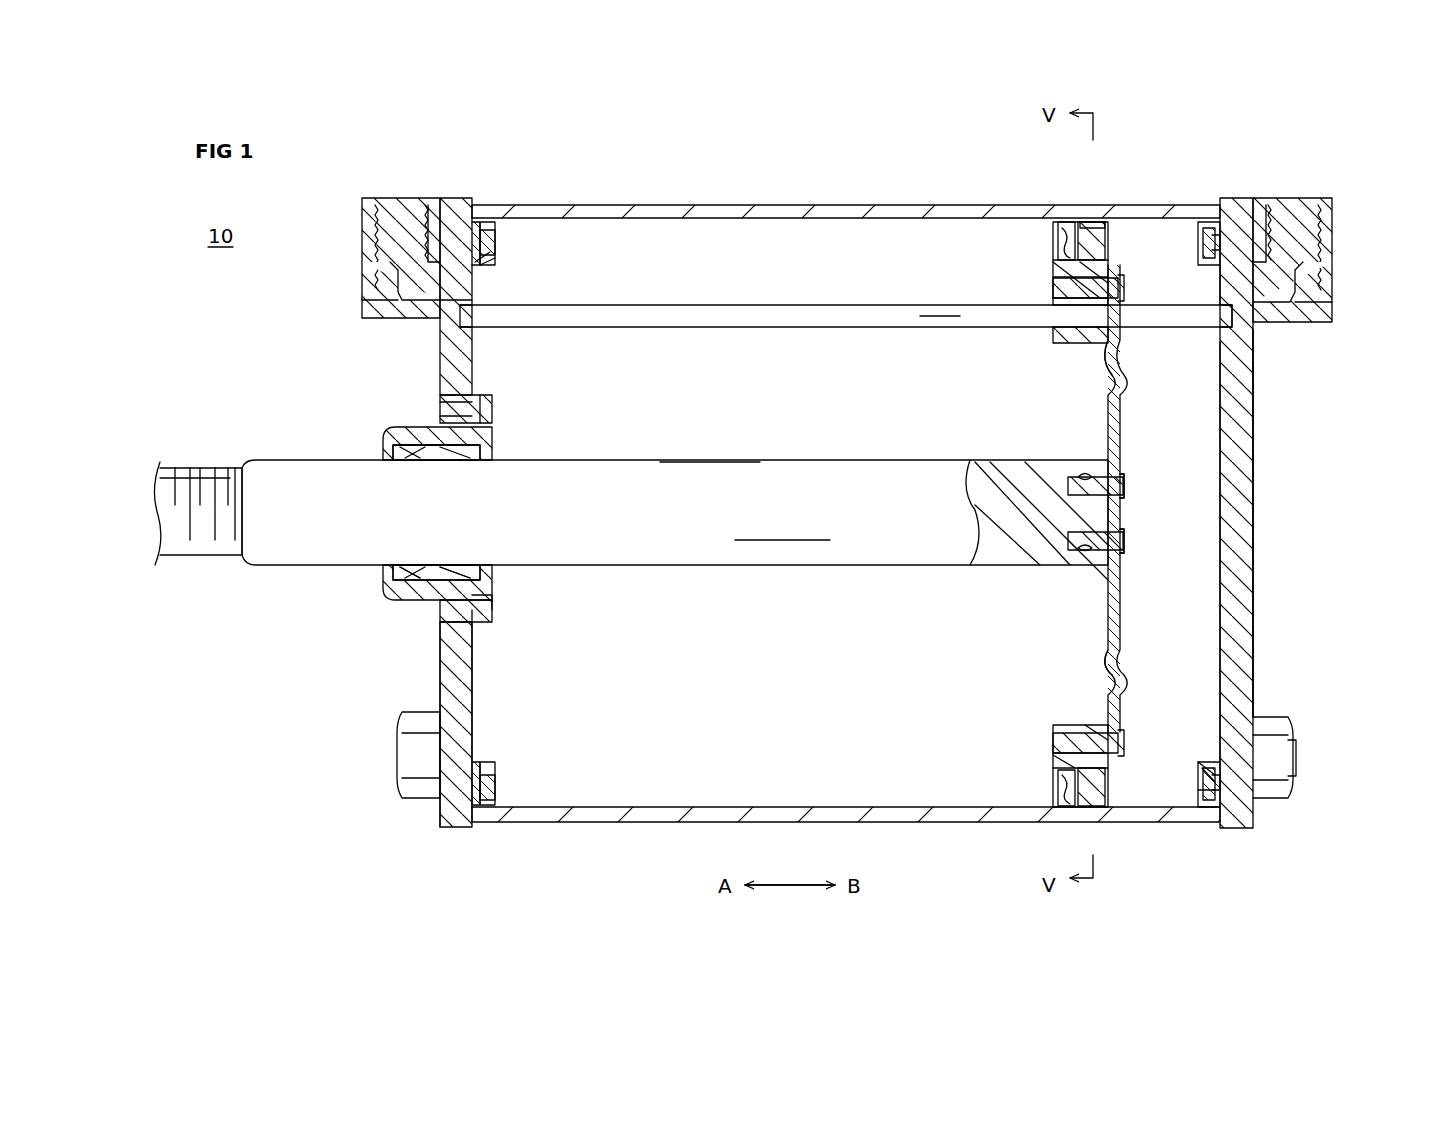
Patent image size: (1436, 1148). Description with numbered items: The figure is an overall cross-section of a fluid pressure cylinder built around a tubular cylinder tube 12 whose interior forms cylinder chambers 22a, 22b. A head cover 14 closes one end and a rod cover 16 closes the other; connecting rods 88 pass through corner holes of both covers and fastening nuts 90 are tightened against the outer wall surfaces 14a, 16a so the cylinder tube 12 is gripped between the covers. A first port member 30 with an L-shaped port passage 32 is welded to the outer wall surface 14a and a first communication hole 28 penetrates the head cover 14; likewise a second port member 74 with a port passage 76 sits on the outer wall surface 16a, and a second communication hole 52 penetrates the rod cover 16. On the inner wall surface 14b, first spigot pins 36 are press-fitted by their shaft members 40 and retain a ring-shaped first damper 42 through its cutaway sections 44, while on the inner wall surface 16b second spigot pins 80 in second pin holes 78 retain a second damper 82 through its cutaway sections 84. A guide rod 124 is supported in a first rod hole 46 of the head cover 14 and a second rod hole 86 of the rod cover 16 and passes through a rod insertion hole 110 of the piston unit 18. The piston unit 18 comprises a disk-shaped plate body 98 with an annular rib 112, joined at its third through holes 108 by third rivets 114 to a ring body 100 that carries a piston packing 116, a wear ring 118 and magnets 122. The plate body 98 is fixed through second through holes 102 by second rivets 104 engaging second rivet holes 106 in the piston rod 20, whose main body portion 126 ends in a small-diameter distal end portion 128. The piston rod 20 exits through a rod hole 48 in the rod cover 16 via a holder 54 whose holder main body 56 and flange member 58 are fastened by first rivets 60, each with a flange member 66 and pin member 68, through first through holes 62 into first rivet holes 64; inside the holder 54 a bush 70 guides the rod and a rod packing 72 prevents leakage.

The cylinder tube 12 is at (707, 210).
The head cover 14 is at (1258, 428).
The outer wall surface of the head cover 14a is at (1254, 585).
The inner wall surface of the head cover 14b is at (1218, 618).
The rod cover 16 is at (432, 360).
The outer wall surface of the rod cover 16a is at (438, 665).
The inner wall surface of the rod cover 16b is at (473, 700).
The piston unit 18 is at (1124, 425).
The piston rod 20 is at (766, 456).
The cylinder chamber 22a is at (1254, 538).
The cylinder chamber 22b is at (640, 812).
The first communication hole 28 is at (1236, 295).
The first port member 30 is at (1345, 240).
The port passage 32 is at (1300, 280).
The first spigot pins 36 is at (1206, 222).
The shaft members 40 is at (462, 800).
The first damper 42 is at (1200, 758).
The cutaway sections 44 is at (1200, 795).
The first rod hole 46 is at (1226, 322).
The rod hole 48 is at (440, 575).
The second communication hole 52 is at (458, 285).
The holder 54 is at (376, 427).
The holder main body 56 is at (415, 430).
The flange member 58 is at (488, 628).
The first rivets 60 is at (497, 402).
The first through holes 62 is at (490, 420).
The first rivet holes 64 is at (452, 610).
The flange member 66 is at (490, 600).
The pin member 68 is at (462, 402).
The bush 70 is at (472, 575).
The rod packing 72 is at (405, 572).
The second port member 74 is at (355, 240).
The port passage 76 is at (400, 280).
The second pin holes 78 is at (462, 235).
The second spigot pins 80 is at (498, 240).
The second damper 82 is at (506, 268).
The cutaway sections 84 is at (486, 230).
The second rod hole 86 is at (470, 320).
The connecting rods 88 is at (1299, 757).
The fastening nuts 90 is at (420, 712).
The plate body 98 is at (1103, 638).
The ring body 100 is at (1048, 728).
The second through holes 102 is at (1120, 483).
The second rivets 104 is at (1124, 543).
The second rivet holes 106 is at (1080, 477).
The third through holes 108 is at (1112, 290).
The rod insertion hole 110 is at (1075, 344).
The rib 112 is at (1120, 356).
The third rivets 114 is at (1050, 287).
The piston packing 116 is at (1066, 222).
The wear ring 118 is at (1095, 222).
The magnets 122 is at (1100, 245).
The guide rod 124 is at (715, 315).
The main body portion 126 is at (684, 460).
The distal end portion 128 is at (203, 557).